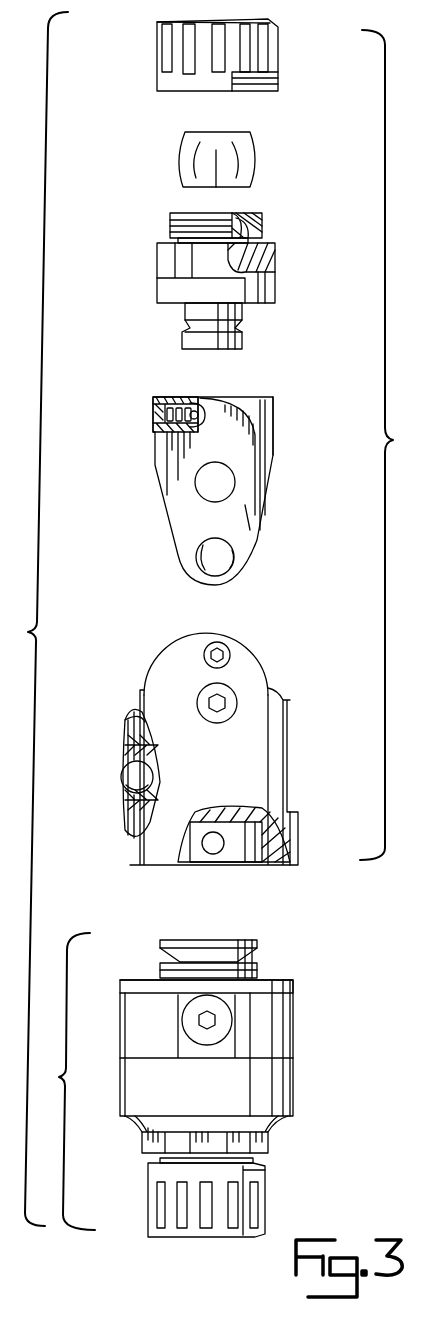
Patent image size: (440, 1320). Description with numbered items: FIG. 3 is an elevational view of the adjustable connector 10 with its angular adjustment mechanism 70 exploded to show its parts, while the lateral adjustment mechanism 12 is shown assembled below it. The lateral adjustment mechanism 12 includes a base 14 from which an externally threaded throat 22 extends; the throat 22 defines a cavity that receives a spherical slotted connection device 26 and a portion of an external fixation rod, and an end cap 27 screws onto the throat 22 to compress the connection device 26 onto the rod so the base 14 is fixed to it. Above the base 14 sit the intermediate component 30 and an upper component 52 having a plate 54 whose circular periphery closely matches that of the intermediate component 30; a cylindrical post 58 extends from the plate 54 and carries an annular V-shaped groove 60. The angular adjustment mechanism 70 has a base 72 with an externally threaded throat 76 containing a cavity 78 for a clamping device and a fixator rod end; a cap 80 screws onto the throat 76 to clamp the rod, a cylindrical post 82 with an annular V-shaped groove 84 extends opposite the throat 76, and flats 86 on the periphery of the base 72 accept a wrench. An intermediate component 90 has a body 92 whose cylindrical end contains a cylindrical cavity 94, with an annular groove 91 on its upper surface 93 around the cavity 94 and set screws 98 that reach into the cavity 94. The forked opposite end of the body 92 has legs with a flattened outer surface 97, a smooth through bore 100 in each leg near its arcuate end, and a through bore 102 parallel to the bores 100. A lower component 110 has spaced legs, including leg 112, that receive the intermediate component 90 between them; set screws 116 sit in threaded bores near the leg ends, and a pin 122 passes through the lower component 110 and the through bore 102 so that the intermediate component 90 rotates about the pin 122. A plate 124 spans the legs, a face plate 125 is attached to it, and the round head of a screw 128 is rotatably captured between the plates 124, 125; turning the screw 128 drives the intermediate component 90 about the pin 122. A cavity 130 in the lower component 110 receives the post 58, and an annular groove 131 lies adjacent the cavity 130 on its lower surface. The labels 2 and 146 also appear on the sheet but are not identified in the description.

The external fixation assembly 2 is at (9, 845).
The adjustable connector 10 is at (0, 620).
The lateral adjustment mechanism 12 is at (36, 1058).
The base 14 is at (295, 1085).
The externally threaded throat 22 is at (270, 1158).
The spherical slotted connection device 26 is at (243, 131).
The end cap 27 is at (268, 1195).
The intermediate component 30 is at (295, 1028).
The upper component 52 is at (137, 975).
The plate 54 is at (293, 980).
The cylindrical post 58 is at (245, 943).
The annular V-shaped groove 60 is at (255, 962).
The angular adjustment mechanism 70 is at (217, 445).
The base 72 is at (277, 262).
The externally threaded throat 76 is at (168, 222).
The cavity 78 is at (240, 213).
The cap 80 is at (278, 48).
The cylindrical post 82 is at (182, 340).
The annular V-shaped groove 84 is at (235, 330).
The flats 86 is at (165, 258).
The intermediate component 90 is at (277, 445).
The annular groove 91 is at (216, 353).
The body 92 is at (275, 407).
The upper surface 93 is at (180, 398).
The cylindrical cavity 94 is at (195, 400).
The flattened outer surface 97 is at (232, 520).
The set screws 98 is at (160, 414).
The through bore 100 is at (200, 568).
The through bore 102 is at (205, 495).
The lower component 110 is at (296, 715).
The leg 112 is at (201, 750).
The set screws 116 is at (202, 665).
The pin 122 is at (230, 688).
The plate 124 is at (140, 705).
The face plate 125 is at (130, 725).
The screw 128 is at (128, 780).
The cavity 130 is at (247, 855).
The annular groove 131 is at (270, 862).
The set screw 146 is at (190, 1027).